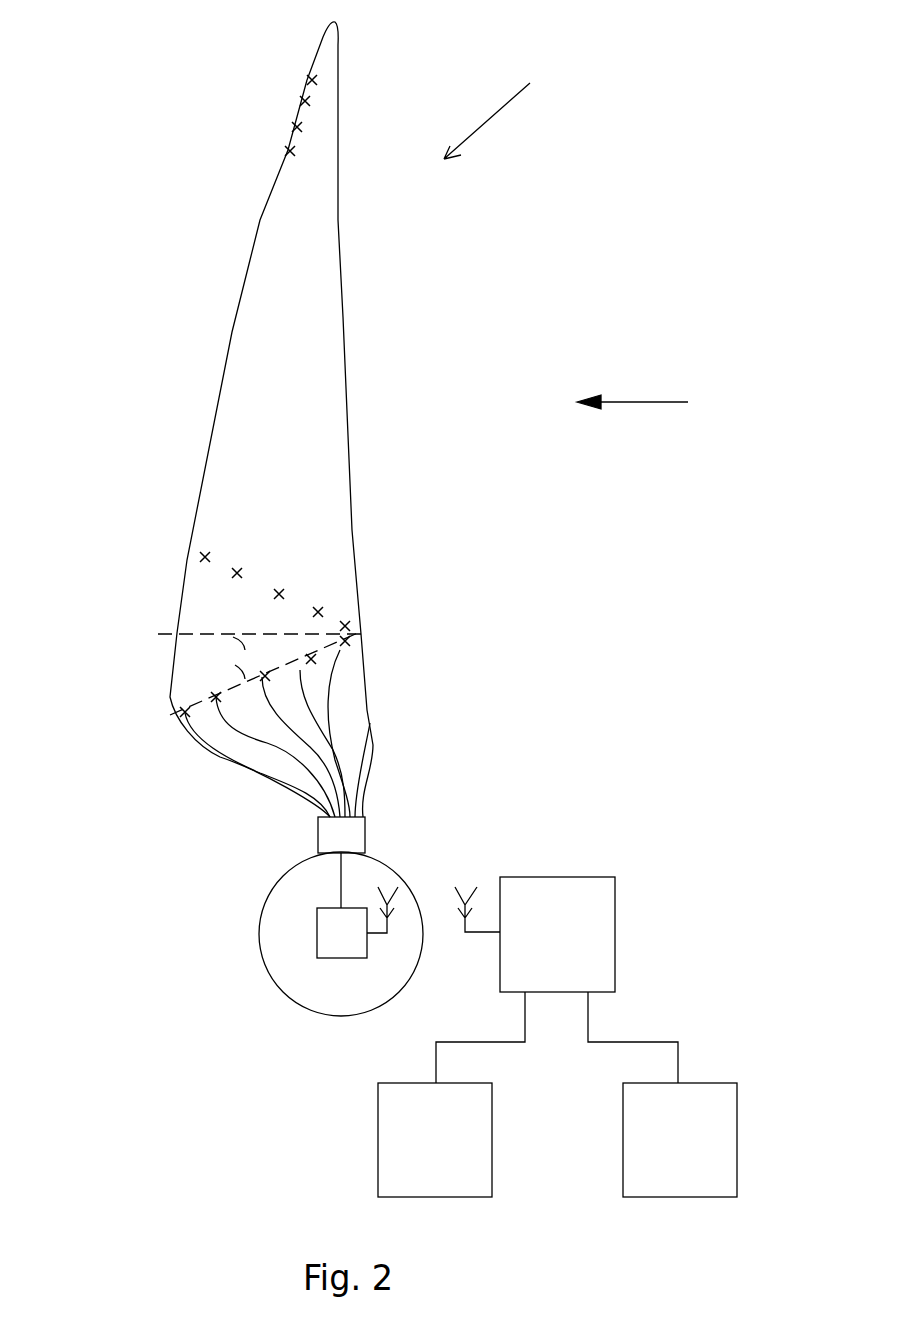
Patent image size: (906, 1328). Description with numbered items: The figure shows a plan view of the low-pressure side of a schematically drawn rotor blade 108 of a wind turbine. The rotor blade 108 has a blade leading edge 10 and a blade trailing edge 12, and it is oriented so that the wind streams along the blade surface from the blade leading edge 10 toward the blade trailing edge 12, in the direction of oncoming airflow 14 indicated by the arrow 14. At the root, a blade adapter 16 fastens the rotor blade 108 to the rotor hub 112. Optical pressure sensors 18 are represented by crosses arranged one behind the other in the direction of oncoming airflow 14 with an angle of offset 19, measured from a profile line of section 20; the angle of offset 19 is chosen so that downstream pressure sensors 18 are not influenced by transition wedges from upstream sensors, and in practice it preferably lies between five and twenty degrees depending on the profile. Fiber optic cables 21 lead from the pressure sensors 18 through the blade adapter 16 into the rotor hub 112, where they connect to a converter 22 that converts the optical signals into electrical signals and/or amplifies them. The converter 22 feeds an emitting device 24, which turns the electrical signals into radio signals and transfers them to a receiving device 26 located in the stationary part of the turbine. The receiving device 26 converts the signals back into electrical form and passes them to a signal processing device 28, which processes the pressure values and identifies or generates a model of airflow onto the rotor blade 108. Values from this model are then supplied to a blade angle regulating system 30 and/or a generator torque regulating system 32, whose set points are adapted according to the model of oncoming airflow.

The blade leading edge 10 is at (343, 318).
The blade trailing edge 12 is at (232, 333).
The direction of oncoming airflow 14 is at (633, 402).
The blade adapter 16 is at (365, 833).
The optical pressure sensors 18 is at (295, 115).
The angle of offset 19 is at (235, 637).
The profile line of section 20 is at (360, 633).
The fiber optic cables 21 is at (370, 723).
The converter 22 is at (317, 925).
The emitting device 24 is at (392, 922).
The receiving device 26 is at (472, 900).
The signal processing device 28 is at (557, 980).
The blade angle regulating system 30 is at (680, 1140).
The generator torque regulating system 32 is at (435, 1140).
The rotor blade 108 is at (510, 107).
The rotor hub 112 is at (278, 990).